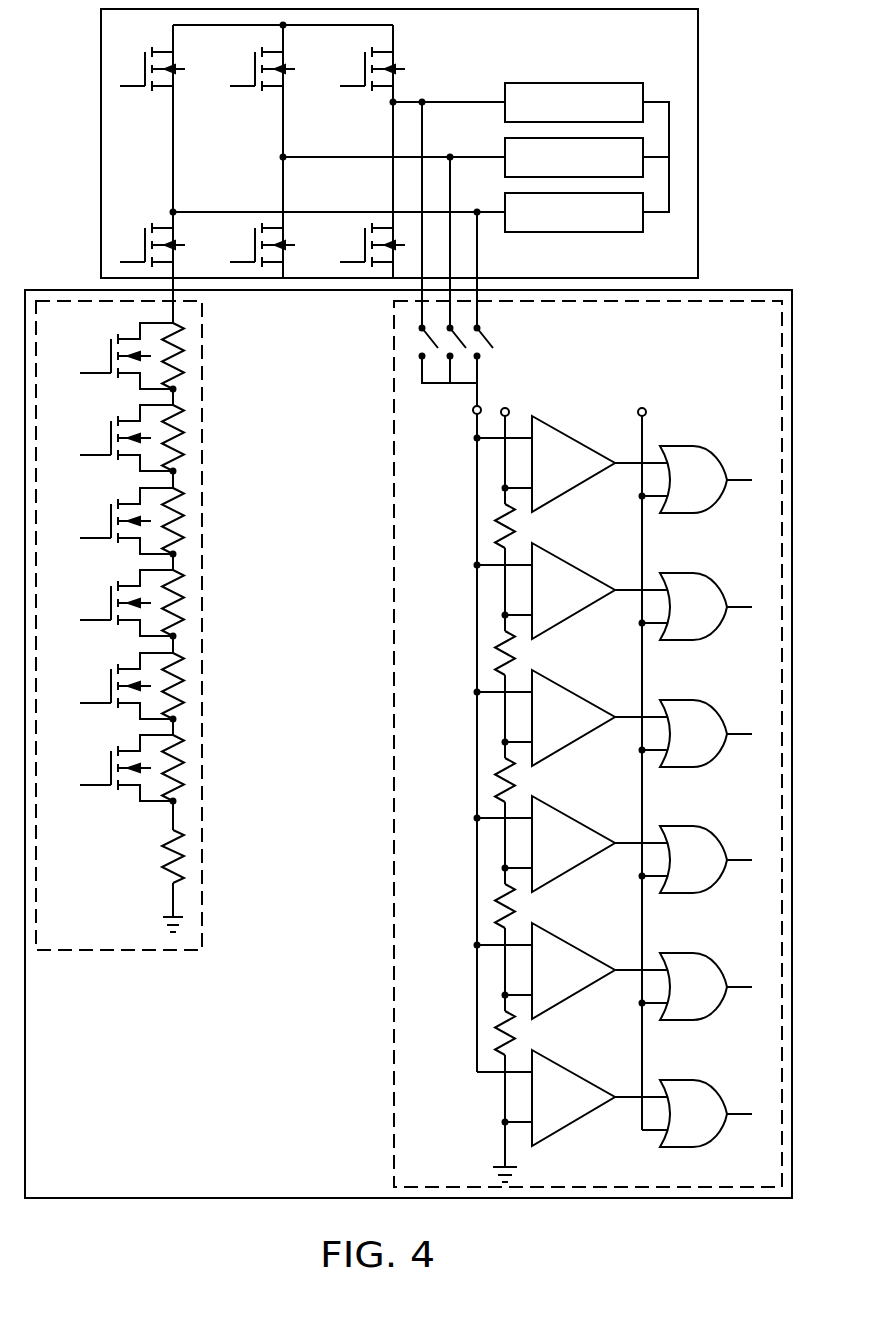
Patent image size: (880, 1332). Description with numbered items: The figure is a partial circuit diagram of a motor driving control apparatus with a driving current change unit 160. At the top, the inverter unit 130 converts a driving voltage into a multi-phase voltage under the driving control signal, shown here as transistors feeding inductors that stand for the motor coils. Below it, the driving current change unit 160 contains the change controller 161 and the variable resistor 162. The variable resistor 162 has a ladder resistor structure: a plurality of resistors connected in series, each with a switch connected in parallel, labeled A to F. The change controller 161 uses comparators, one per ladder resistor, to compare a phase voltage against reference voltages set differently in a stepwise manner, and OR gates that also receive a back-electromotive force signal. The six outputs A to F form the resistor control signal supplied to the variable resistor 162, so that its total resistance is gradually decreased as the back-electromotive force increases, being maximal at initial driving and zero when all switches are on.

The inverter unit 130 is at (700, 100).
The driving current change unit 160 is at (746, 290).
The change controller 161 is at (394, 470).
The variable resistor 162 is at (204, 418).